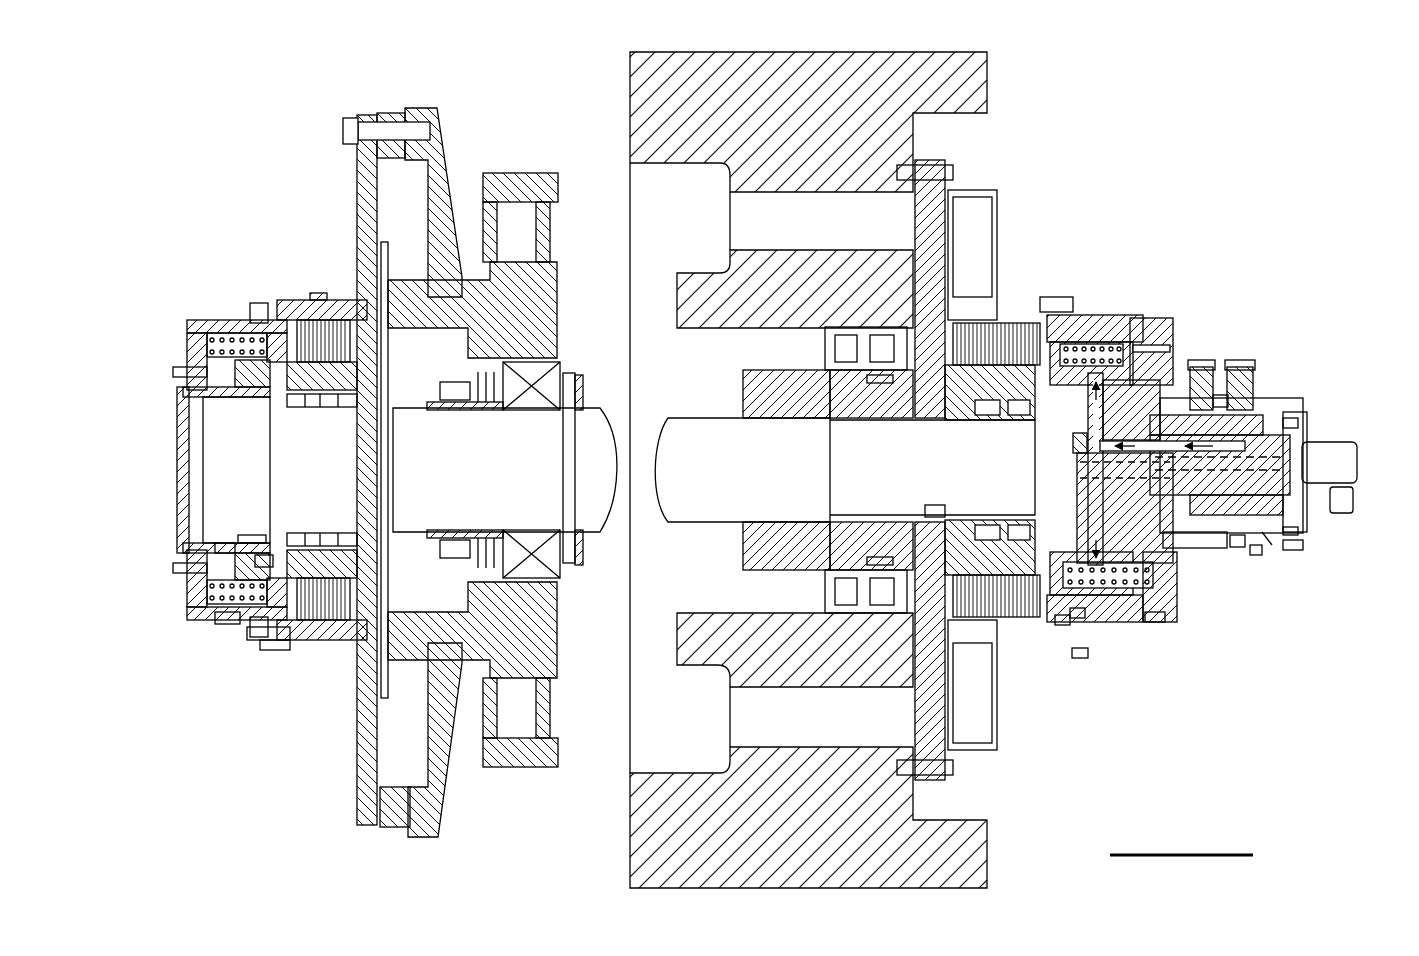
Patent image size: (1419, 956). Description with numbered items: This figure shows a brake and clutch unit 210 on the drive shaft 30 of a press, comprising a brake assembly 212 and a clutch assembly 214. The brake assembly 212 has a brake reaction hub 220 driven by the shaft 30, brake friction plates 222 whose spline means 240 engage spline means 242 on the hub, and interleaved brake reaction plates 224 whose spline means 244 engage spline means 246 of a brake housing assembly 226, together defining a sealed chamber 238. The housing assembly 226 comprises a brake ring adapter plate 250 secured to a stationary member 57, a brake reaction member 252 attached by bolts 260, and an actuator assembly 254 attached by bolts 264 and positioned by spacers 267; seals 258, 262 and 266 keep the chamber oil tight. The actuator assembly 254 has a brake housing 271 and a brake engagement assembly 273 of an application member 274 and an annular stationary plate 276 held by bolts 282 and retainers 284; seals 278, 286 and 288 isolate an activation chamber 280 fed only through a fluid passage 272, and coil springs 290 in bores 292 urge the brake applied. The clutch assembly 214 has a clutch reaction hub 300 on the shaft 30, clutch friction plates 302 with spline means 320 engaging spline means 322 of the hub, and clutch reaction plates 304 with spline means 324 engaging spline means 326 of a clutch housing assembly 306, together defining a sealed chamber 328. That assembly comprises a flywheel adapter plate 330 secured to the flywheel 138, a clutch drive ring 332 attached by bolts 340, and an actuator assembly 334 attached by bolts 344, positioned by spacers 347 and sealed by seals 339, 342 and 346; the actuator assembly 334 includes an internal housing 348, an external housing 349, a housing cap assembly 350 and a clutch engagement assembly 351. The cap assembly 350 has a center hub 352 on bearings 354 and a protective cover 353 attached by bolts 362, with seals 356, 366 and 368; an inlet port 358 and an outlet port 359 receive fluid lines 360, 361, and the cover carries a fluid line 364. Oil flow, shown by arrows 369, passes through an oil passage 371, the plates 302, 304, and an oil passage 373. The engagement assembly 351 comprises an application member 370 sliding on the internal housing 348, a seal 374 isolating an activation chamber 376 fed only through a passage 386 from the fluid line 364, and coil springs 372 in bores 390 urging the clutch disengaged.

The drive shaft 30 is at (754, 478).
The stationary member 57 is at (437, 158).
The flywheel 138 is at (905, 58).
The brake and clutch unit 210 is at (1258, 114).
The brake assembly 212 is at (262, 160).
The clutch assembly 214 is at (1262, 226).
The brake reaction hub 220 is at (420, 448).
The brake friction plates 222 is at (395, 335).
The brake reaction plates 224 is at (340, 623).
The brake housing assembly 226 is at (262, 247).
The sealed chamber 238 is at (255, 468).
The spline means 240 is at (480, 362).
The spline means 242 is at (306, 398).
The spline means 244 is at (440, 300).
The spline means 246 is at (480, 265).
The brake ring adapter plate 250 is at (357, 162).
The brake reaction member 252 is at (347, 263).
The actuator assembly 254 is at (167, 336).
The seal 258 is at (420, 415).
The bolts 260 is at (330, 283).
The seal 262 is at (362, 677).
The bolts 264 is at (245, 635).
The seal 266 is at (277, 648).
The spacers 267 is at (268, 325).
The brake housing 271 is at (227, 543).
The fluid passage 272 is at (185, 418).
The brake engagement assembly 273 is at (252, 540).
The application member 274 is at (192, 584).
The annular stationary plate 276 is at (243, 580).
The seal 278 is at (177, 553).
The activation chamber 280 is at (195, 383).
The bolts 282 is at (298, 392).
The retainers 284 is at (263, 400).
The seal 286 is at (263, 555).
The second seal 288 is at (225, 622).
The coil springs 290 is at (210, 345).
The bores 292 is at (227, 330).
The clutch reaction hub 300 is at (933, 512).
The clutch friction plates 302 is at (1050, 620).
The clutch reaction plates 304 is at (1033, 620).
The clutch housing assembly 306 is at (1347, 298).
The spline means 320 is at (960, 415).
The spline means 322 is at (960, 430).
The spline means 324 is at (1045, 320).
The spline means 326 is at (975, 300).
The sealed chamber 328 is at (1077, 524).
The flywheel adapter plate 330 is at (950, 168).
The clutch drive ring 332 is at (1045, 297).
The actuator assembly 334 is at (1177, 312).
The seal 339 is at (938, 512).
The bolts 340 is at (975, 275).
The seal 342 is at (913, 297).
The bolts 344 is at (1067, 622).
The seal 346 is at (1067, 653).
The spacers 347 is at (1080, 655).
The internal housing 348 is at (1060, 445).
The external housing 349 is at (1152, 618).
The housing cap assembly 350 is at (1380, 384).
The clutch engagement assembly 351 is at (1188, 280).
The center hub 352 is at (1243, 545).
The protective cover 353 is at (1293, 547).
The bearings 354 is at (1287, 530).
The seal 356 is at (1063, 483).
The inlet port 358 is at (1255, 405).
The outlet port 359 is at (1255, 372).
The fluid line 360 is at (1203, 378).
The fluid line 361 is at (1238, 395).
The bolts 362 is at (1287, 410).
The fluid line 364 is at (1329, 462).
The seal 366 is at (1260, 555).
The seal 368 is at (1354, 492).
The arrows 369 is at (1080, 343).
The application member 370 is at (1105, 593).
The oil passage 371 is at (1078, 614).
The coil springs 372 is at (1143, 587).
The oil passage 373 is at (1262, 548).
The seal 374 is at (1153, 583).
The activation chamber 376 is at (1160, 360).
The passage 386 is at (1085, 462).
The bores 390 is at (1108, 345).